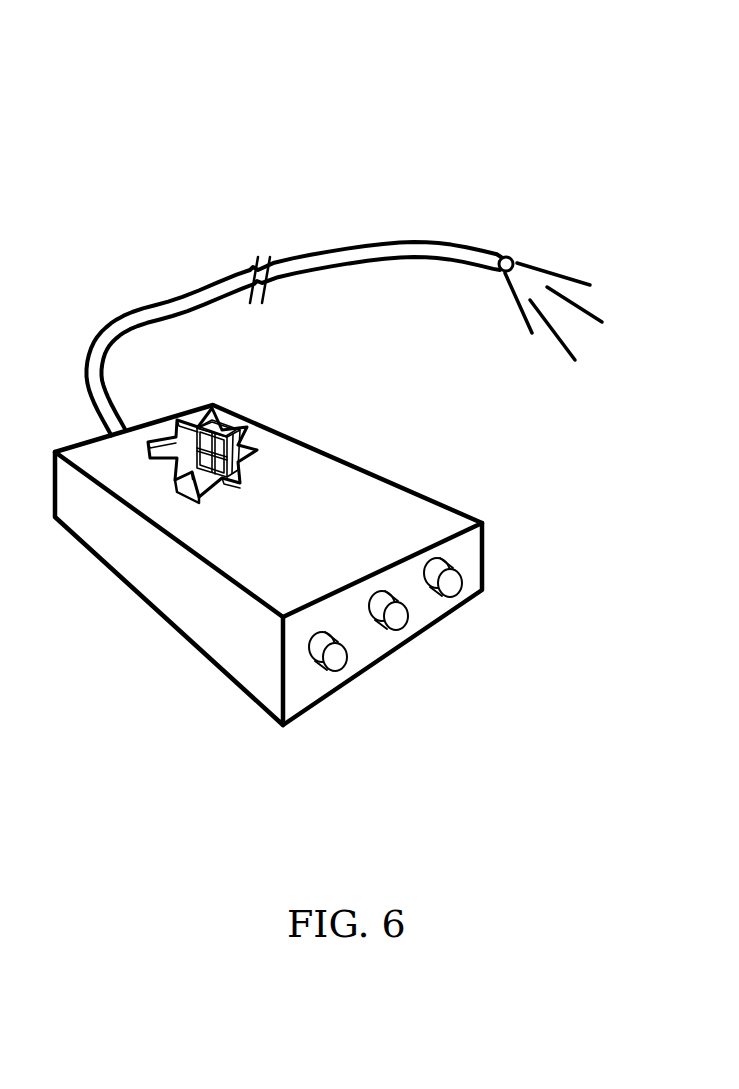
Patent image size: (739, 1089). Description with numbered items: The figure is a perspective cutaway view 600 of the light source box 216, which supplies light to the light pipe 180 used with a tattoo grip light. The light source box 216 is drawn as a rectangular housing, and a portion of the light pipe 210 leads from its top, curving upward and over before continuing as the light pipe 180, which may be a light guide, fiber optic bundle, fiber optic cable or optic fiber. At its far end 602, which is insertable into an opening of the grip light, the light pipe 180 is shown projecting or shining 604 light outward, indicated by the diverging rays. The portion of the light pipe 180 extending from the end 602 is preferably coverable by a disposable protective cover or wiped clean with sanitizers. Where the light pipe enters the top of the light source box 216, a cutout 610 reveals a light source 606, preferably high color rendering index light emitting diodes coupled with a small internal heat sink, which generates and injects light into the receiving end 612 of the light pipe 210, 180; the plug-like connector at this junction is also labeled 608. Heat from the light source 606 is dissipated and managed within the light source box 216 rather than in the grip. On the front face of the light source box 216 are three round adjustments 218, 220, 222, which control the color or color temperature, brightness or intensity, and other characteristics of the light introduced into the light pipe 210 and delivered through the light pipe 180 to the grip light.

The perspective cutaway view 600 is at (448, 145).
The portion of the light pipe 210 is at (294, 306).
The light pipe 180 is at (294, 339).
The end 602 is at (564, 233).
The projecting/shining light 604 is at (531, 327).
The light source 606 is at (230, 492).
The connector plug face 608 is at (291, 421).
The cutout 610 is at (125, 568).
The receiving end 612 is at (149, 505).
The light source box 216 is at (268, 571).
The adjustment 218 is at (342, 715).
The adjustment 220 is at (402, 674).
The adjustment 222 is at (458, 641).